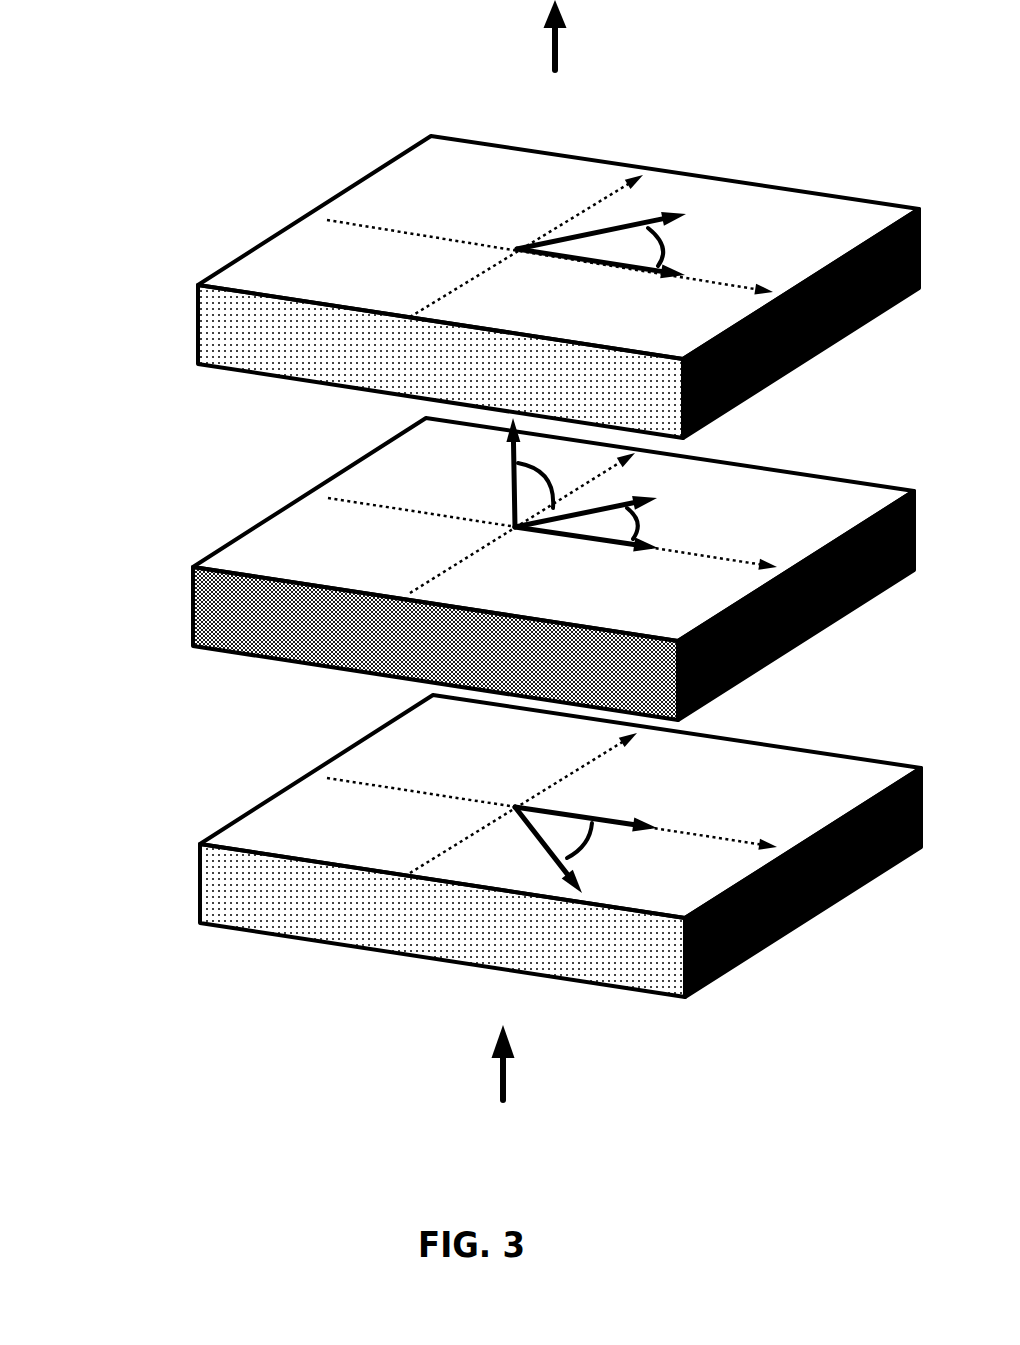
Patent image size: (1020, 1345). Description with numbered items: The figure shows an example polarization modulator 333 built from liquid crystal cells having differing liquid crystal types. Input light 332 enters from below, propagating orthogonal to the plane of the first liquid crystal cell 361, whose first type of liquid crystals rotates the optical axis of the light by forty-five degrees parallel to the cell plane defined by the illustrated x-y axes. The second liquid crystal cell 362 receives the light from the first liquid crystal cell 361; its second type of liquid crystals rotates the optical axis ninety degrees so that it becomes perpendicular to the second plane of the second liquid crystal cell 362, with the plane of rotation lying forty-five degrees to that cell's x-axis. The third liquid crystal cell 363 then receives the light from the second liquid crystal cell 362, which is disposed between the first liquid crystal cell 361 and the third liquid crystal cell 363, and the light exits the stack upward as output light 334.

The polarization modulator 333 is at (89, 278).
The first liquid crystal cell 361 is at (194, 880).
The second liquid crystal cell 362 is at (191, 605).
The third liquid crystal cell 363 is at (194, 335).
The input light 332 is at (499, 1082).
The output light 334 is at (551, 54).